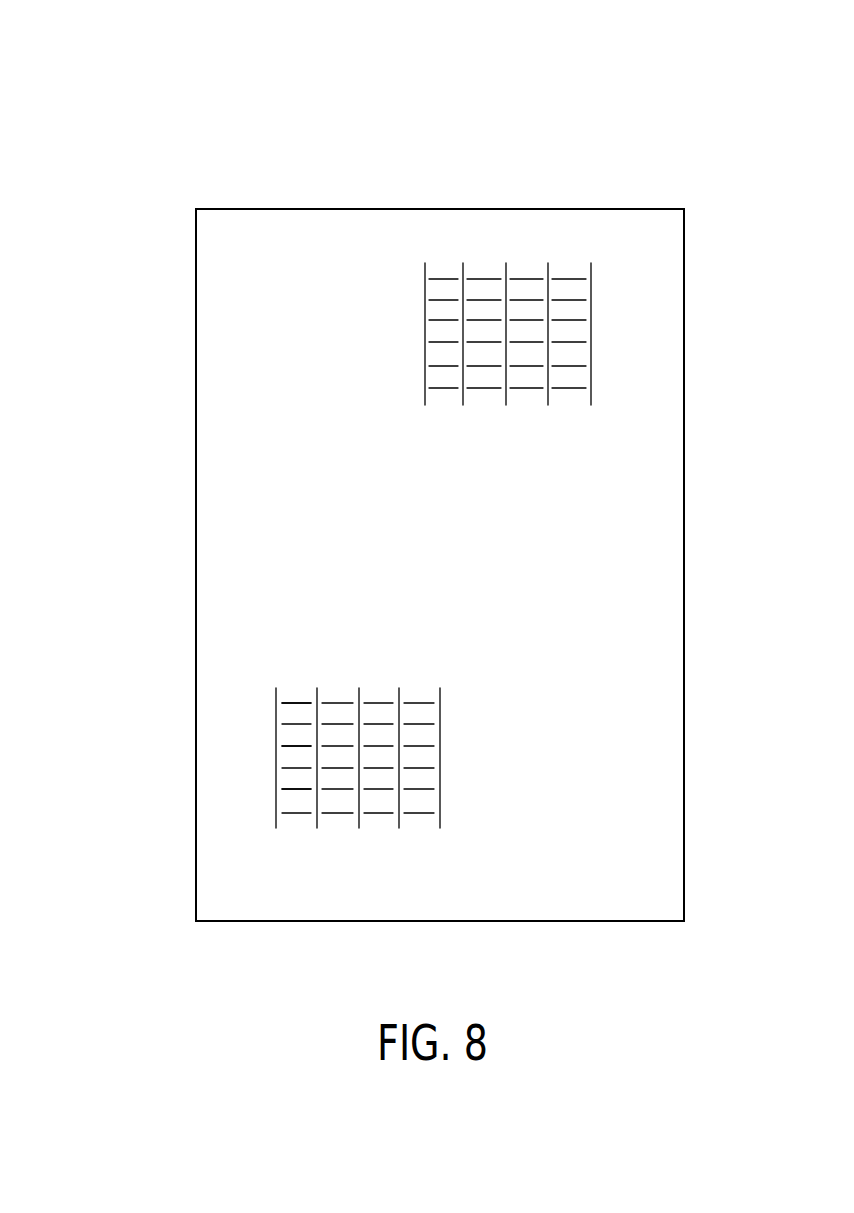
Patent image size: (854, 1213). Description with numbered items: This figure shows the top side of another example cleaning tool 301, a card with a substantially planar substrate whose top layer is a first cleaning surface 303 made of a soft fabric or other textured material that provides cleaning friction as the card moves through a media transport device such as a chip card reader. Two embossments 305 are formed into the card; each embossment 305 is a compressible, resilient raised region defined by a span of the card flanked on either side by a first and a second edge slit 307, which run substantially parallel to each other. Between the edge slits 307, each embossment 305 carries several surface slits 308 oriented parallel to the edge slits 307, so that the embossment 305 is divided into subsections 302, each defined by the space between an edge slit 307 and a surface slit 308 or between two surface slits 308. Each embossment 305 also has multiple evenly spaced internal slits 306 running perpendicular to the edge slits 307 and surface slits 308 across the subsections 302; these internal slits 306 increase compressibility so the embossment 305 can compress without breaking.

The cleaning tool 301 is at (195, 157).
The subsections 302 is at (426, 690).
The first cleaning surface 303 is at (227, 534).
The embossment 305 is at (525, 315).
The internal slit 306 is at (290, 705).
The edge slit 307 is at (425, 312).
The surface slit 308 is at (463, 293).